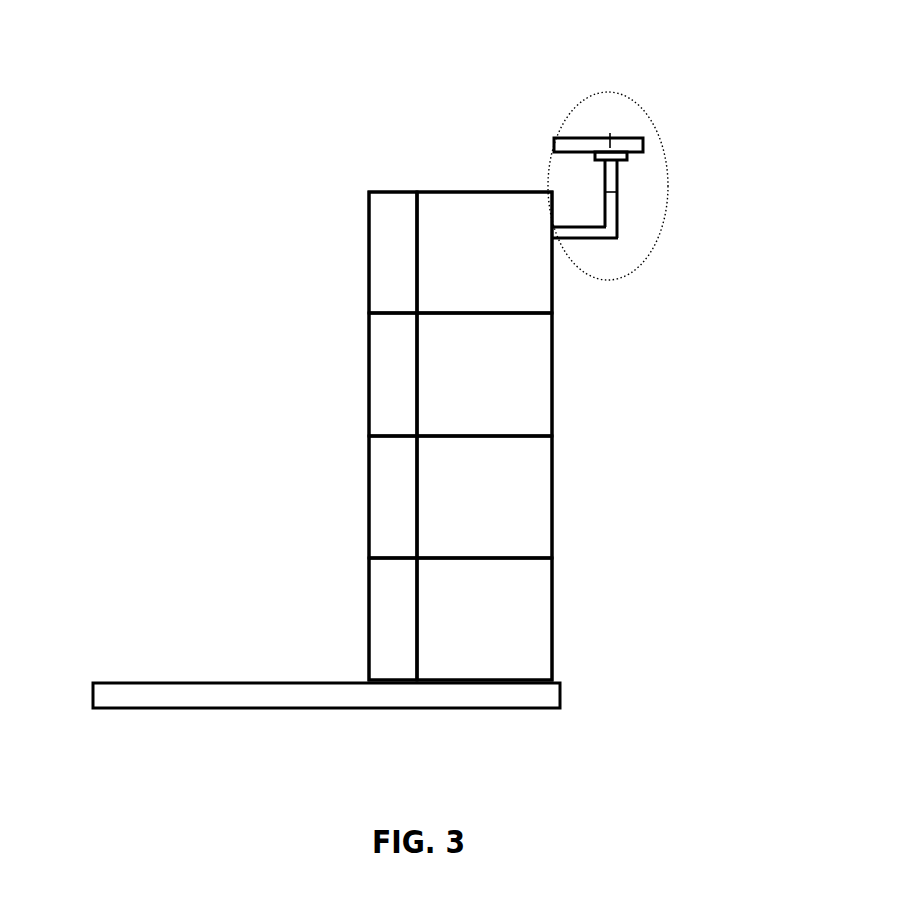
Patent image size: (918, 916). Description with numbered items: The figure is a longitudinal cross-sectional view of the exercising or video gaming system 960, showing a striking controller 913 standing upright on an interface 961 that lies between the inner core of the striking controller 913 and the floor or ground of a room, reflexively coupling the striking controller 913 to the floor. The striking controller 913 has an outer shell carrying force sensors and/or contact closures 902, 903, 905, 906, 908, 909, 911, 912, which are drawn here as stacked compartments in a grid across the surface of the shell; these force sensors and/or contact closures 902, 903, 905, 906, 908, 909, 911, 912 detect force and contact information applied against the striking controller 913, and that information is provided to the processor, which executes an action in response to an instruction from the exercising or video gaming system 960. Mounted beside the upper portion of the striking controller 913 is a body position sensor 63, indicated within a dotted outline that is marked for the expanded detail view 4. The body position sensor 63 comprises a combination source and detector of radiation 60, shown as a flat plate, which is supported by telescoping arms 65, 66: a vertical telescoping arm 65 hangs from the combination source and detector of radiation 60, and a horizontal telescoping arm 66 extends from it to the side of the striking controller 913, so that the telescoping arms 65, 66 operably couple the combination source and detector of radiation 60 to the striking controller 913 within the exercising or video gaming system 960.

The sensor assembly detail region 4 is at (567, 117).
The combination source and detector of radiation 60 is at (633, 137).
The body position sensor 63 is at (555, 75).
The telescoping arm 65 is at (615, 177).
The telescoping arm 66 is at (580, 235).
The force sensor and/or contact closure 902 is at (392, 250).
The force sensor and/or contact closure 903 is at (500, 258).
The force sensor and/or contact closure 905 is at (395, 362).
The force sensor and/or contact closure 906 is at (495, 378).
The force sensor and/or contact closure 908 is at (397, 487).
The force sensor and/or contact closure 909 is at (500, 508).
The force sensor and/or contact closure 911 is at (398, 600).
The force sensor and/or contact closure 912 is at (507, 628).
The striking controller 913 is at (296, 405).
The exercising or video gaming system 960 is at (262, 302).
The interface 961 is at (226, 662).